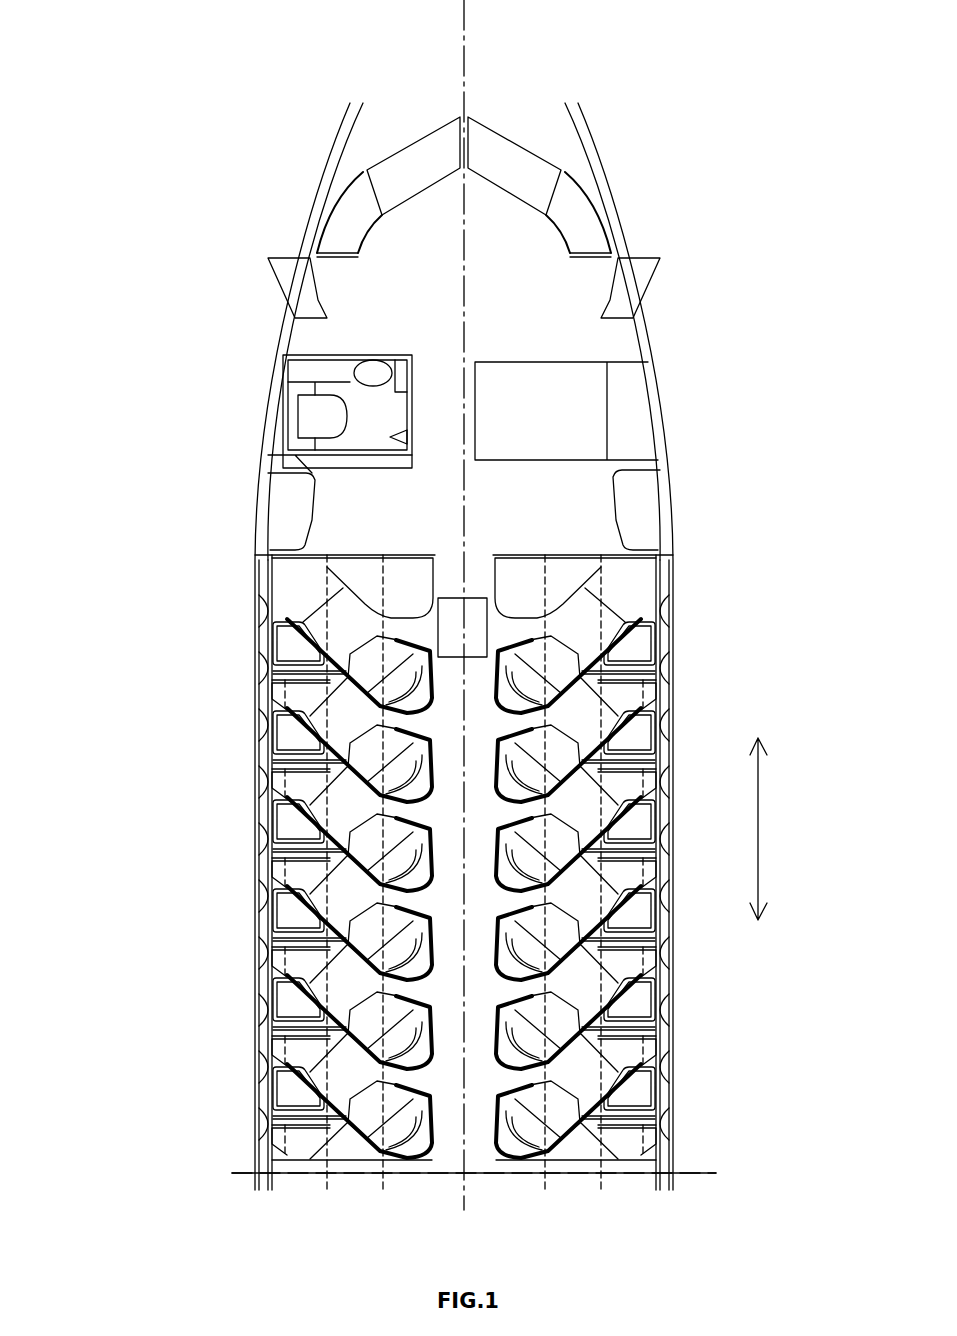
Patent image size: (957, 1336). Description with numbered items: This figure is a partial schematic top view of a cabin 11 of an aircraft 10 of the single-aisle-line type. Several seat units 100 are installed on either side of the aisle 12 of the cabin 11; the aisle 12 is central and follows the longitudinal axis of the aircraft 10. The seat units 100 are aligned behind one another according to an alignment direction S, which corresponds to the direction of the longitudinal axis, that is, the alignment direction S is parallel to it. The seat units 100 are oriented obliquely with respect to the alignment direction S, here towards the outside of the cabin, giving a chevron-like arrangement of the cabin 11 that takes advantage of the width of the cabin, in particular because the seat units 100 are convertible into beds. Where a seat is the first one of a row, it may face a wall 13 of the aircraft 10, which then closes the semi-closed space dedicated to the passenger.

The aircraft 10 is at (713, 375).
The cabin 11 is at (347, 530).
The aisle 12 is at (463, 1130).
The wall 13 is at (533, 618).
The seat unit 100 is at (337, 972).
The alignment direction S is at (758, 835).